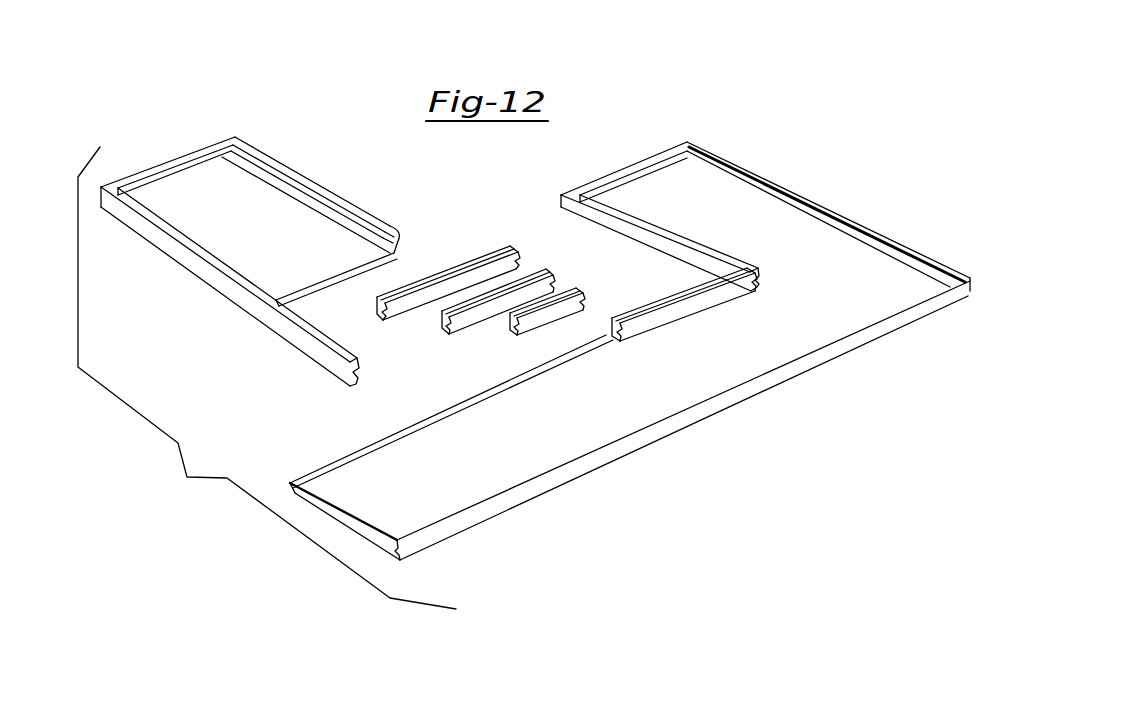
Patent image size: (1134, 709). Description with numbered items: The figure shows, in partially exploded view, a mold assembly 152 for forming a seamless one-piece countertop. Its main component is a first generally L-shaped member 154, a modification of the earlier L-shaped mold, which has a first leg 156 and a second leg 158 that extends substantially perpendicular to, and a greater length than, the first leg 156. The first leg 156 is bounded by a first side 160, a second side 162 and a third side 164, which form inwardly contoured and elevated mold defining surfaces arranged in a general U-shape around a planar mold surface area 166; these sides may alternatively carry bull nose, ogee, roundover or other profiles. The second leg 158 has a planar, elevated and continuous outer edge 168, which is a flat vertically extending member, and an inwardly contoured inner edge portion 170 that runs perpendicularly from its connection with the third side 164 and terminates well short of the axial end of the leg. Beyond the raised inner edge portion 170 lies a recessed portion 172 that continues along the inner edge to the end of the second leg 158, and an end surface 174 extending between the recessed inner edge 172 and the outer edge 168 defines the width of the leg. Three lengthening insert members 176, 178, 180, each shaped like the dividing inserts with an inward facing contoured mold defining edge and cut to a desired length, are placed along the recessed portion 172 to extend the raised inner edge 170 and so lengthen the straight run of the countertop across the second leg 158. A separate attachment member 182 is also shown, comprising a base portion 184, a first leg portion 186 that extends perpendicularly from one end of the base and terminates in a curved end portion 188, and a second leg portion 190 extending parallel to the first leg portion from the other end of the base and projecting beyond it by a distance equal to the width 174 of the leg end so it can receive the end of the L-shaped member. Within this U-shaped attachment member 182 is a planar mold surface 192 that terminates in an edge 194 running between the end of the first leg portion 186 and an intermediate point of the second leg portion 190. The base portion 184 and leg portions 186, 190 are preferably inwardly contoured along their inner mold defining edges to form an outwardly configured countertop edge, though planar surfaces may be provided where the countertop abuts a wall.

The mold assembly 152 is at (603, 498).
The first generally L-shaped member 154 is at (678, 296).
The first leg 156 is at (786, 167).
The second leg 158 is at (850, 343).
The first side 160 is at (835, 208).
The second side 162 is at (640, 161).
The third side 164 is at (645, 227).
The planar mold surface area 166 is at (716, 232).
The outer edge 168 is at (773, 382).
The inner edge portion 170 is at (674, 294).
The recessed portion 172 is at (378, 446).
The end surface 174 is at (300, 494).
The lengthening insert member 176 is at (443, 330).
The lengthening insert member 178 is at (455, 265).
The lengthening insert member 180 is at (511, 328).
The attachment member 182 is at (203, 130).
The base portion 184 is at (165, 168).
The first leg portion 186 is at (277, 160).
The curved end portion 188 is at (400, 232).
The second leg portion 190 is at (240, 297).
The planar mold surface 192 is at (260, 229).
The edge 194 is at (307, 297).